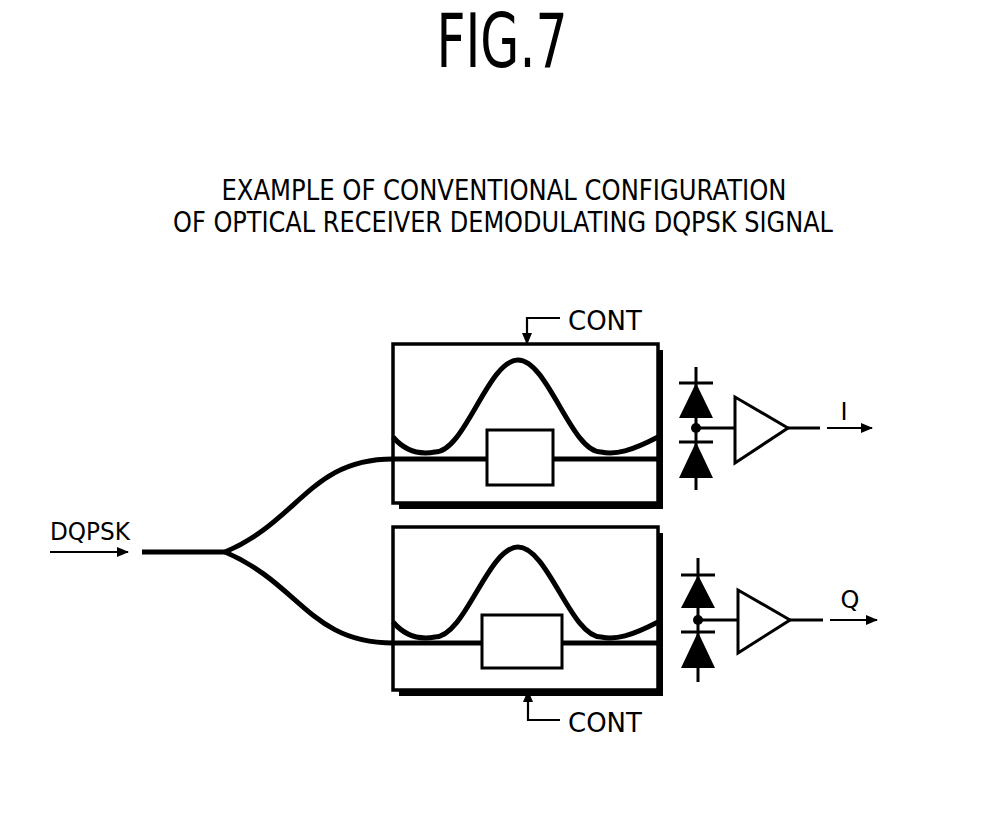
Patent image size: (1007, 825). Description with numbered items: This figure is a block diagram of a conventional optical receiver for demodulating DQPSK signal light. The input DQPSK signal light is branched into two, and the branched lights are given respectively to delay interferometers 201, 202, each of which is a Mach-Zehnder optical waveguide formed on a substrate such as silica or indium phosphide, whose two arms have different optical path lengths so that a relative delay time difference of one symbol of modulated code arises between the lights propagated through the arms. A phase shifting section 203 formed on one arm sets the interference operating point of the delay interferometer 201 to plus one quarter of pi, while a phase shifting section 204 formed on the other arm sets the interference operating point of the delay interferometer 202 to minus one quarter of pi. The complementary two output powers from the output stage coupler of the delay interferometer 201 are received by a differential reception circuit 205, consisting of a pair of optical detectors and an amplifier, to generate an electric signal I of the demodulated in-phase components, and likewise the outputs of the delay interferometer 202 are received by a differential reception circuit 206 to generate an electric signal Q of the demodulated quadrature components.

The delay interferometer 201 is at (393, 386).
The delay interferometer 202 is at (393, 664).
The phase shifting section 203 is at (498, 430).
The phase shifting section 204 is at (494, 669).
The differential reception circuit 205 is at (746, 376).
The differential reception circuit 206 is at (749, 569).